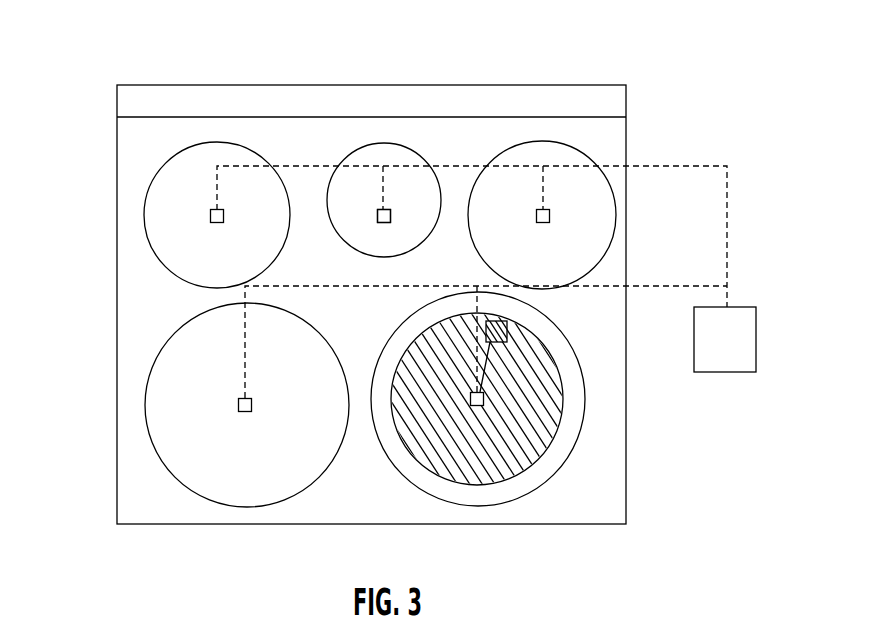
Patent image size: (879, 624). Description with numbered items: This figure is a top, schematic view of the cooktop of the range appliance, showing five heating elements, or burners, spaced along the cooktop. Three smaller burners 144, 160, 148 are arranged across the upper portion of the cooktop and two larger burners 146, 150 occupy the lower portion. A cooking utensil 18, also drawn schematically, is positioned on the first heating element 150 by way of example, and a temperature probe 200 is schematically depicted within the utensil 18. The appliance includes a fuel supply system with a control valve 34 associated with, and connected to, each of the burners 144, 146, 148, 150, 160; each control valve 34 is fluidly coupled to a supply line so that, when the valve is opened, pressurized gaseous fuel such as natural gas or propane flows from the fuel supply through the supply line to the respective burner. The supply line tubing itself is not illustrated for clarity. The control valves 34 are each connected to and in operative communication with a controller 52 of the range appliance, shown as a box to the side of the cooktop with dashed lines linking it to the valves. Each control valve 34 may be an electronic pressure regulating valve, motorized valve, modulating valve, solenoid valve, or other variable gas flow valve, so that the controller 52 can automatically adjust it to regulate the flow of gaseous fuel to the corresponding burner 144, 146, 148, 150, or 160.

The burner 144 is at (145, 203).
The burner 160 is at (368, 143).
The burner 148 is at (585, 153).
The burner 146 is at (313, 485).
The first heating element 150 is at (585, 414).
The cooking utensil 18 is at (540, 453).
The control valve 34 is at (387, 210).
The temperature probe 200 is at (508, 337).
The controller 52 is at (756, 343).